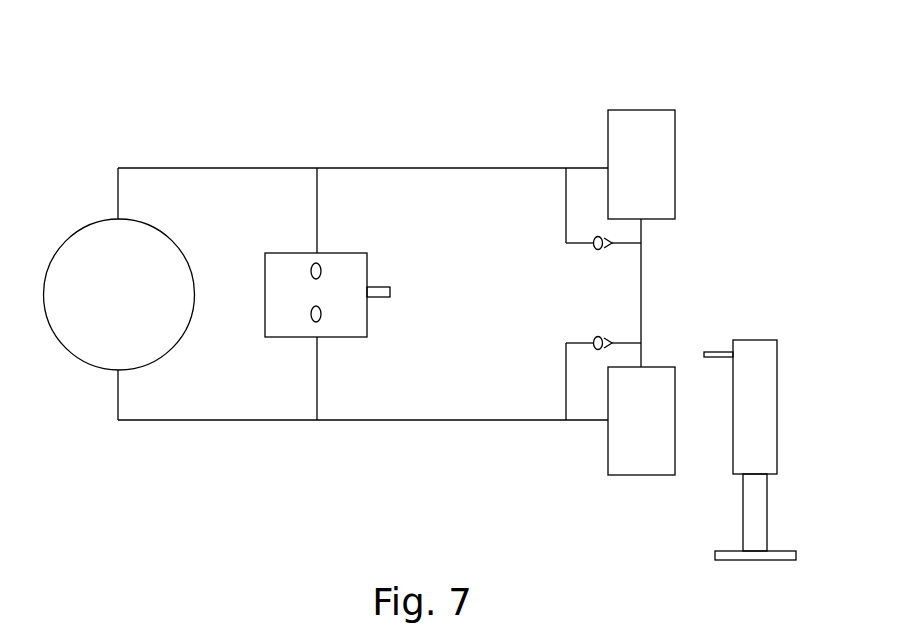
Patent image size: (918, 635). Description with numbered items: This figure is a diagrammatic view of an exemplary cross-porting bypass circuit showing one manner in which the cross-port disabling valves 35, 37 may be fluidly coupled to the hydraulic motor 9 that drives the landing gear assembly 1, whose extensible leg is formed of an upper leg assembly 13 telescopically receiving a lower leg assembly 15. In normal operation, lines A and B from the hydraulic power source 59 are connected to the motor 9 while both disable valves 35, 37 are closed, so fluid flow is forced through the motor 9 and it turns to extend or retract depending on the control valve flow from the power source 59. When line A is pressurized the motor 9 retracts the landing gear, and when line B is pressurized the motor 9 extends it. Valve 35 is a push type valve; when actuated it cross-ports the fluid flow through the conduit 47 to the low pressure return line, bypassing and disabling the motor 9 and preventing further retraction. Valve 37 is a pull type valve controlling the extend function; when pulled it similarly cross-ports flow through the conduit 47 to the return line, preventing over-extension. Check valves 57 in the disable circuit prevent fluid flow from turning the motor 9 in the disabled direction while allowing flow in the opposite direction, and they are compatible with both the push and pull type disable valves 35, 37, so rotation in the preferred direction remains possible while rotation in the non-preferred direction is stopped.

The landing gear assembly 1 is at (772, 405).
The hydraulic motor 9 is at (297, 282).
The upper leg assembly 13 is at (752, 412).
The lower leg assembly 15 is at (755, 505).
The disable valve 35 is at (658, 124).
The disable valve 37 is at (640, 433).
The conduit 47 is at (641, 300).
The check valves 57 is at (595, 250).
The hydraulic power source 59 is at (119, 294).
The line A is at (281, 168).
The line B is at (282, 421).